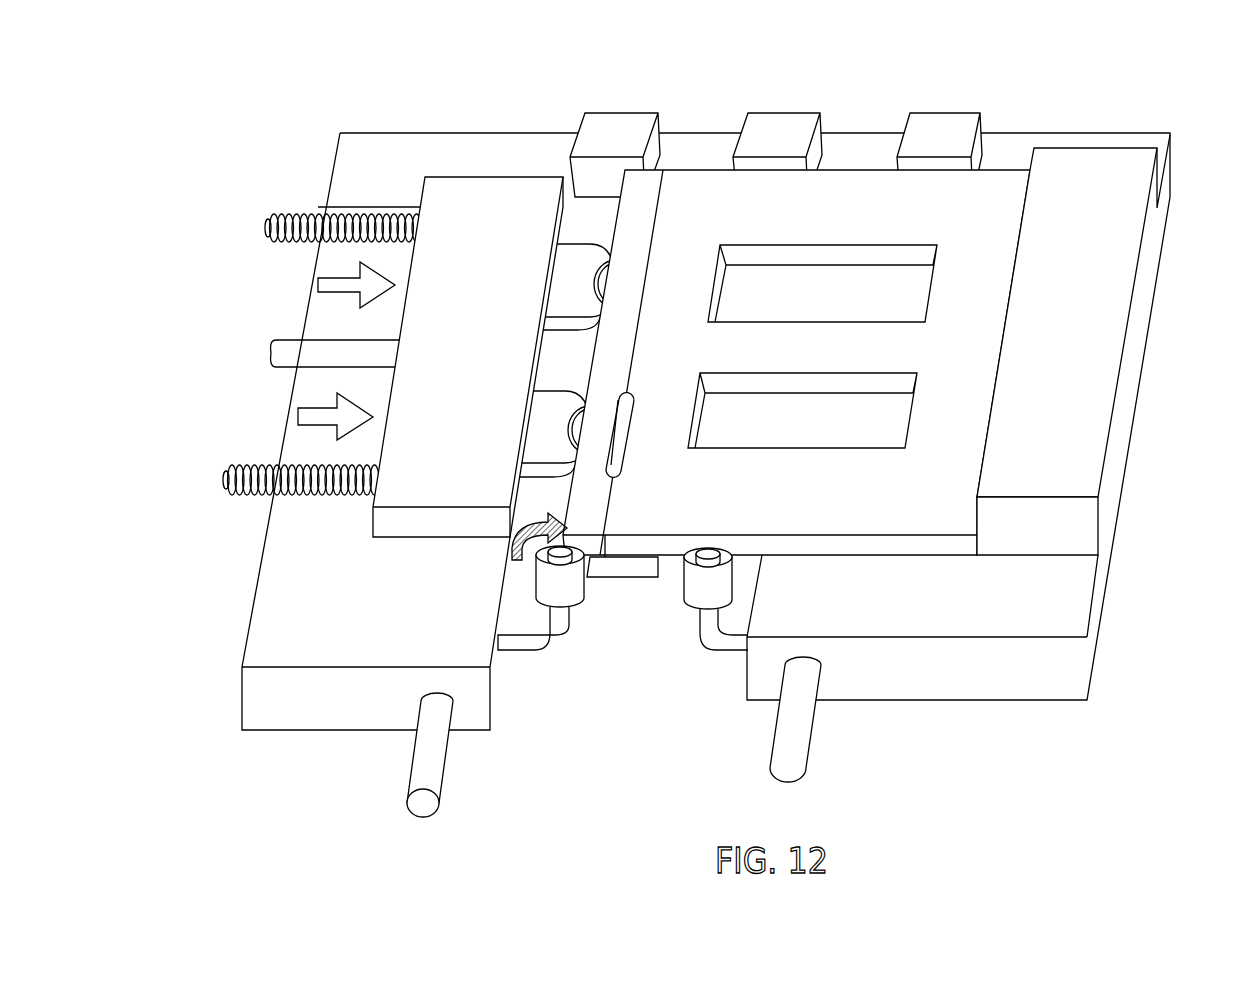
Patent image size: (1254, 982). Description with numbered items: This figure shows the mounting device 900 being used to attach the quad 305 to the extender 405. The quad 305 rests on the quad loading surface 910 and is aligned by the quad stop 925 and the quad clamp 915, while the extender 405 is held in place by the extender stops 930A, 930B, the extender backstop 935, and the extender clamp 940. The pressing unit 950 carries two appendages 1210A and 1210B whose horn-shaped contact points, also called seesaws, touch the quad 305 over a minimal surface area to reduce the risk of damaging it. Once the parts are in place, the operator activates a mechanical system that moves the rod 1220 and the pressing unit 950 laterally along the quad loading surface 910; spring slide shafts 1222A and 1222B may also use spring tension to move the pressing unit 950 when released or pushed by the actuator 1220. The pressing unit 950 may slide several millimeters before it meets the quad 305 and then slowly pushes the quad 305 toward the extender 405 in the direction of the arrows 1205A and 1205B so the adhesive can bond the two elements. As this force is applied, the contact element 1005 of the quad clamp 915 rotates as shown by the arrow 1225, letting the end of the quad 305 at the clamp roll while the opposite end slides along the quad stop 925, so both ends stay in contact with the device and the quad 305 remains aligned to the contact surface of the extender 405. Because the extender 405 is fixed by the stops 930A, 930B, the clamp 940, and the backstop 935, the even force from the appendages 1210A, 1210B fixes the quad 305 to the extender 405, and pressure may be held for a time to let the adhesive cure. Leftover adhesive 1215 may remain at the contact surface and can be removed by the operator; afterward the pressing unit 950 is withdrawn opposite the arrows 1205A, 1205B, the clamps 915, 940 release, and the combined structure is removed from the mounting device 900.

The mounting device 900 is at (1060, 679).
The quad stop 925 is at (617, 123).
The extender stop 930A is at (780, 127).
The extender stop 930B is at (945, 127).
The appendage 1210A is at (550, 405).
The appendage 1210B is at (572, 257).
The extender 405 is at (975, 220).
The quad 305 is at (650, 193).
The leftover adhesive 1215 is at (623, 465).
The extender backstop 935 is at (1093, 328).
The spring slide shaft 1222A is at (265, 228).
The spring slide shaft 1222B is at (225, 473).
The rod 1220 is at (272, 353).
The arrow 1205A is at (323, 293).
The arrow 1205B is at (302, 425).
The pressing unit 950 is at (448, 195).
The quad loading surface 910 is at (532, 514).
The contact element 1005 is at (572, 600).
The quad clamp 915 is at (565, 615).
The extender clamp 940 is at (700, 647).
The arrow 1225 is at (508, 553).